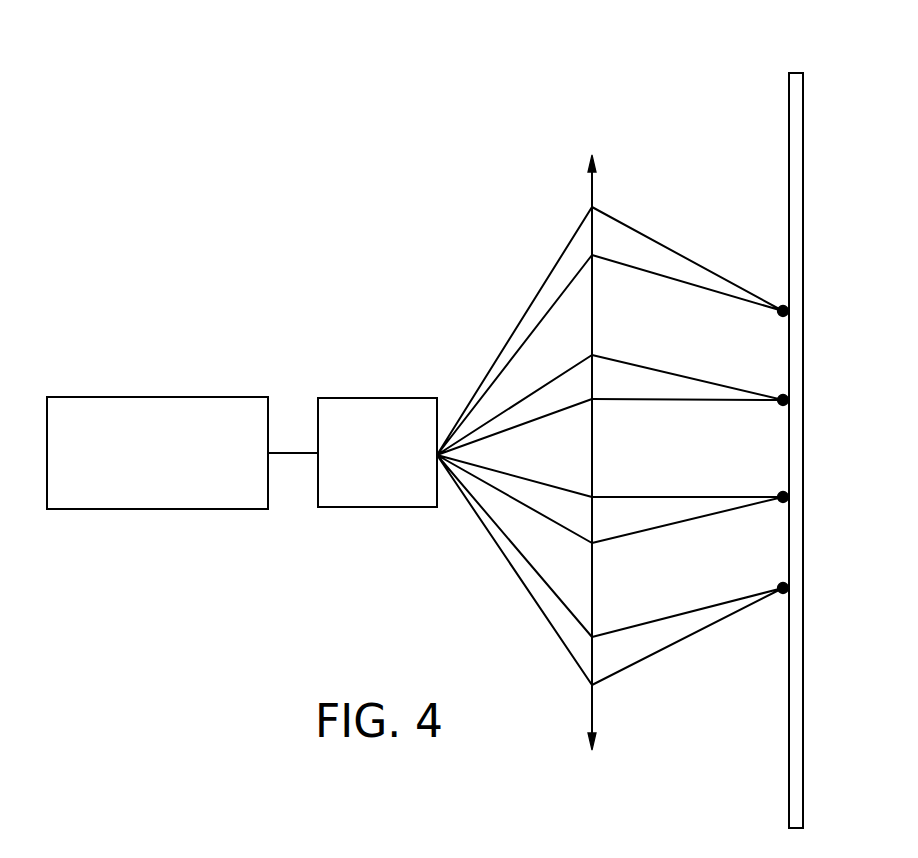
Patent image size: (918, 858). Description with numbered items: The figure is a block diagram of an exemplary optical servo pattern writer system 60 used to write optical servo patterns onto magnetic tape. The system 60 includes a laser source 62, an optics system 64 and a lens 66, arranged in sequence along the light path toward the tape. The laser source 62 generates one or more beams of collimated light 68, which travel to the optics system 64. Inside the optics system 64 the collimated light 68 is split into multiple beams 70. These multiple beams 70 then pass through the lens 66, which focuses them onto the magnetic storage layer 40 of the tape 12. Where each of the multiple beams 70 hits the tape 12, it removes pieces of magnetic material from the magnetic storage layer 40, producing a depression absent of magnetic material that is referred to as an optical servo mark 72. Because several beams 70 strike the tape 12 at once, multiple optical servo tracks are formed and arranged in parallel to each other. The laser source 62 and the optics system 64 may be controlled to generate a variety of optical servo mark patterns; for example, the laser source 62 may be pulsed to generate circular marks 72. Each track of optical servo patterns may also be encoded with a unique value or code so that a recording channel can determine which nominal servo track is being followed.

The optical servo pattern writer system 60 is at (380, 25).
The laser source 62 is at (153, 397).
The collimated light 68 is at (288, 452).
The optics system 64 is at (362, 398).
The lens 66 is at (594, 182).
The multiple beams 70 is at (552, 307).
The optical servo mark 72 is at (780, 305).
The tape 12 is at (798, 73).
The magnetic storage layer 40 is at (772, 122).